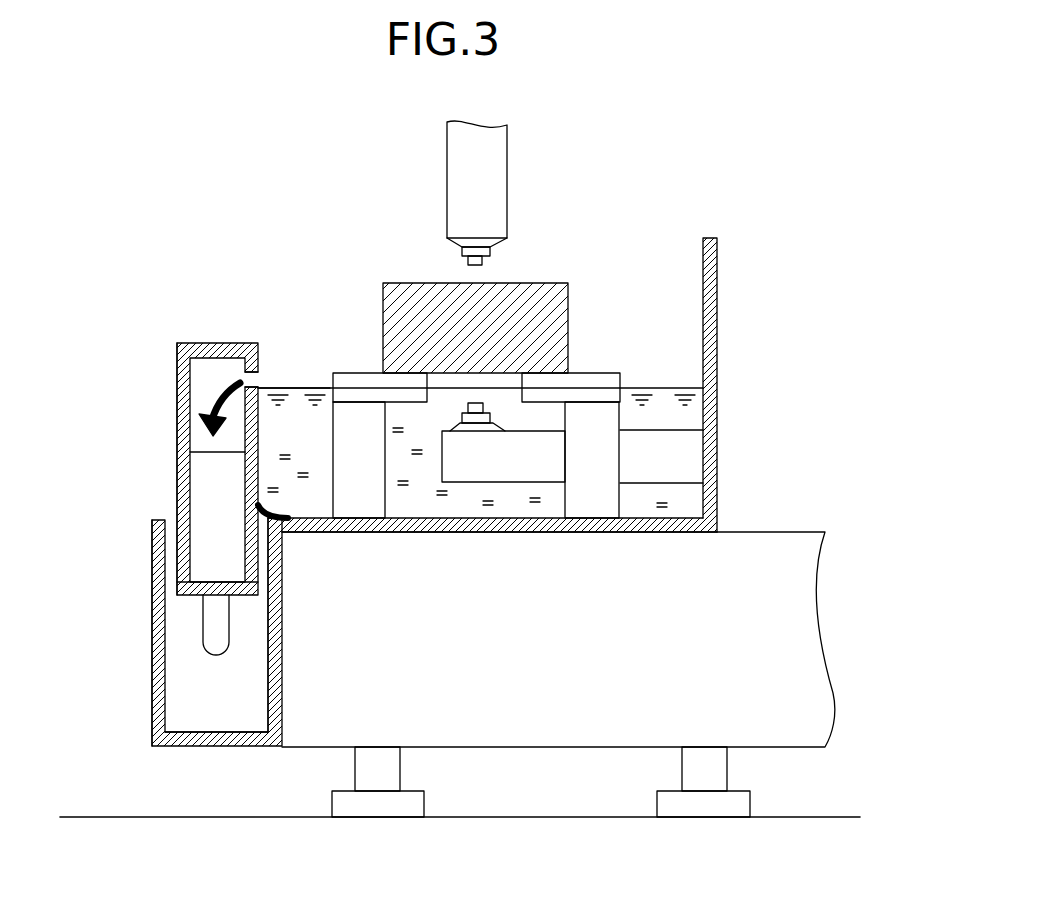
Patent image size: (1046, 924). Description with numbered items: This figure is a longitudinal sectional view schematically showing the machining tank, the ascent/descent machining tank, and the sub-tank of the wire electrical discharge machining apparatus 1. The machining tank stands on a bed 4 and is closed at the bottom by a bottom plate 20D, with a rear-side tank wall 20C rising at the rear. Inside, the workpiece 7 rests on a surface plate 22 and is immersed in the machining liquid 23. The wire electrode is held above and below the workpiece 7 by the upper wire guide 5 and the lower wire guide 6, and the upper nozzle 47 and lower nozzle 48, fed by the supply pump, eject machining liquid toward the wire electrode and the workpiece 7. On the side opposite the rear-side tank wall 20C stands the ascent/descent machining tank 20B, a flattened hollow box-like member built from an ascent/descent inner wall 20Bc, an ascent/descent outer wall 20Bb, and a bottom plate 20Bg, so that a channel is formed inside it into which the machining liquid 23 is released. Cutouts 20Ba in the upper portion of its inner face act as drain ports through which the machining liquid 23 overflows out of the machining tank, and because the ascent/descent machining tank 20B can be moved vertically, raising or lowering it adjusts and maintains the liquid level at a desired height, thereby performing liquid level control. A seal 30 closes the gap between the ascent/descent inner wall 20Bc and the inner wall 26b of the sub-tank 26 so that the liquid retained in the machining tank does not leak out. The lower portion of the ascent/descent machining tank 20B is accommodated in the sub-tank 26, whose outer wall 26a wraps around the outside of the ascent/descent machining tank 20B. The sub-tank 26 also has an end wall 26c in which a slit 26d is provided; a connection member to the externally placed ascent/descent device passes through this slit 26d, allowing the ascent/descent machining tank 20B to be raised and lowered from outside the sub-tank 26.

The wire electrical discharge machining apparatus 1 is at (645, 163).
The bed 4 is at (518, 700).
The upper wire guide 5 is at (507, 147).
The lower wire guide 6 is at (467, 483).
The workpiece 7 is at (523, 283).
The ascent/descent machining tank 20B is at (177, 490).
The cutouts 20Ba is at (247, 378).
The ascent/descent outer wall 20Bb is at (177, 395).
The ascent/descent inner wall 20Bc is at (177, 452).
The bottom plate 20Bg is at (190, 596).
The rear-side tank wall 20C is at (717, 258).
The bottom plate 20D is at (588, 520).
The surface plate 22 is at (365, 373).
The machining liquid 23 is at (645, 387).
The sub-tank 26 is at (152, 562).
The outer wall 26a is at (160, 683).
The inner wall 26b is at (268, 703).
The end wall 26c is at (182, 710).
The slit 26d is at (212, 638).
The seal 30 is at (265, 512).
The upper nozzle 47 is at (484, 259).
The lower nozzle 48 is at (488, 408).